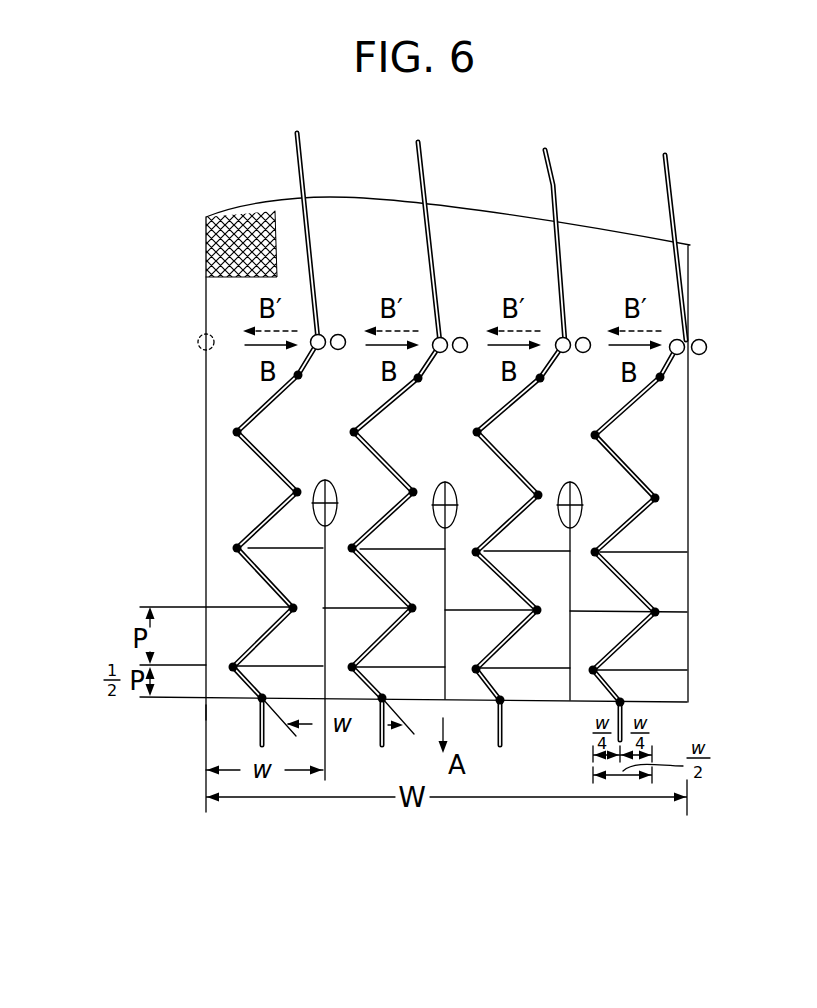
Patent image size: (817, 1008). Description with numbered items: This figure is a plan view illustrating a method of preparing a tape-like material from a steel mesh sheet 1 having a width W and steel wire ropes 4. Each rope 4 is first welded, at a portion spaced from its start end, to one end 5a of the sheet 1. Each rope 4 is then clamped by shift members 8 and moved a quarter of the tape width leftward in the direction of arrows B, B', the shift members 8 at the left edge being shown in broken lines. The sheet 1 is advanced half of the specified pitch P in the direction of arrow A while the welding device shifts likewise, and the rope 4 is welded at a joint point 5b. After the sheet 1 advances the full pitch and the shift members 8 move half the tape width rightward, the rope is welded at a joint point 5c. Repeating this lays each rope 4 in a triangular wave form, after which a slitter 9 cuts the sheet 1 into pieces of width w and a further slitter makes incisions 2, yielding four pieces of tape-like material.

The sheet 1 is at (688, 437).
The incisions 2 is at (597, 610).
The rope 4 is at (707, 172).
The one end of the sheet 5a is at (620, 702).
The joint point 5b is at (597, 670).
The joint point 5c is at (660, 612).
The shift members 8 is at (687, 323).
The slitter 9 is at (580, 493).